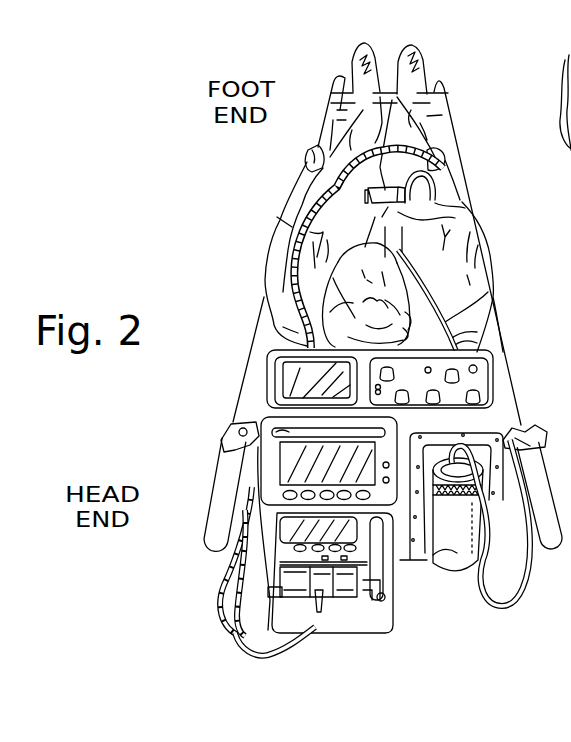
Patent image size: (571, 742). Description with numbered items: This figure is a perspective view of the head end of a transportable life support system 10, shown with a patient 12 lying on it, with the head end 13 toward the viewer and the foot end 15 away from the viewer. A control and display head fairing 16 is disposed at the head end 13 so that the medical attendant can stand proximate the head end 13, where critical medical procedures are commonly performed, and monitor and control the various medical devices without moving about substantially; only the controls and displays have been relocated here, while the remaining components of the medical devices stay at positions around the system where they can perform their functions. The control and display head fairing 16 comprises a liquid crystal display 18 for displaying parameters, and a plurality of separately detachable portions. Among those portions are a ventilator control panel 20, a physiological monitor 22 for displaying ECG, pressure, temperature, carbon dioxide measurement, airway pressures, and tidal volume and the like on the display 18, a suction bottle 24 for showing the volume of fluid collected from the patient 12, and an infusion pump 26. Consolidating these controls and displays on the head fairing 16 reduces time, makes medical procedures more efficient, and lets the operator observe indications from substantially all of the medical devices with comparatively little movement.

The transportable life support system 10 is at (507, 352).
The patient 12 is at (407, 124).
The head end 13 is at (230, 417).
The foot end 15 is at (317, 105).
The control and display head fairing 16 is at (180, 628).
The liquid crystal display 18 is at (290, 381).
The ventilator control panel 20 is at (477, 380).
The physiological monitor 22 is at (293, 470).
The suction bottle 24 is at (472, 548).
The infusion pump 26 is at (352, 618).